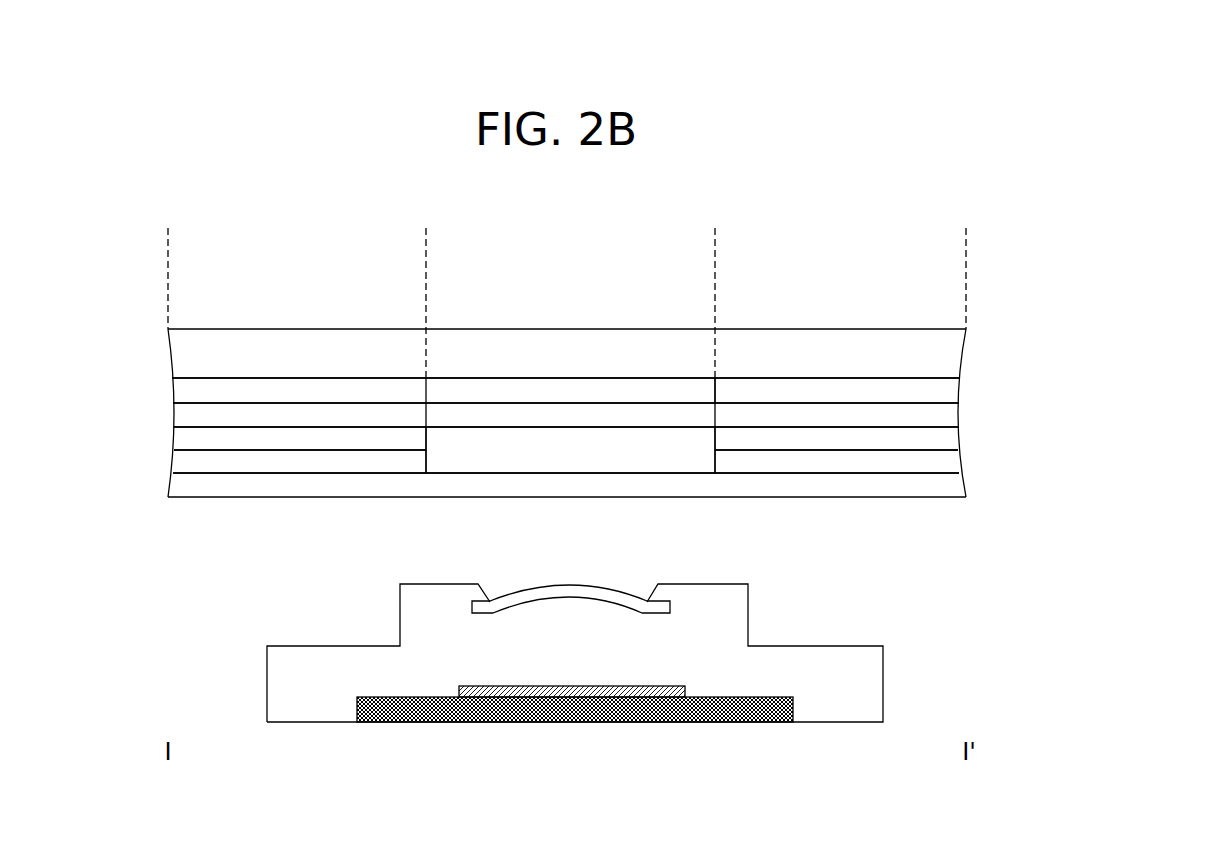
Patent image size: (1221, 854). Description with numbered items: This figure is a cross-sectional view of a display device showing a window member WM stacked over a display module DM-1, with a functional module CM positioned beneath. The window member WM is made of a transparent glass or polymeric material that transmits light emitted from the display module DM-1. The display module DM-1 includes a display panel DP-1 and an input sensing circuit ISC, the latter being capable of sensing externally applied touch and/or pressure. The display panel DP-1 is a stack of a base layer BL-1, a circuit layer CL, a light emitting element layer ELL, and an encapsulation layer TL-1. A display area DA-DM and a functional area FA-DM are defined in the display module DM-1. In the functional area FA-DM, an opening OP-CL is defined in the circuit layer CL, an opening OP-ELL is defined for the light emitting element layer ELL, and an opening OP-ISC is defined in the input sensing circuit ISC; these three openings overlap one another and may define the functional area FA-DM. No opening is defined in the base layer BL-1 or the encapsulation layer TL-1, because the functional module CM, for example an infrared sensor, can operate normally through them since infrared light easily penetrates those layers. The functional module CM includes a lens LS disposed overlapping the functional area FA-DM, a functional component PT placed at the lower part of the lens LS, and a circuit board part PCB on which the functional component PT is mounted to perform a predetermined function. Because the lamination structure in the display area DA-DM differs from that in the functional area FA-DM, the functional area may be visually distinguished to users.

The display area DA-DM is at (966, 236).
The functional area FA-DM is at (426, 236).
The window member WM is at (958, 353).
The input sensing circuit ISC is at (953, 392).
The encapsulation layer TL-1 is at (955, 413).
The light emitting element layer ELL is at (955, 438).
The circuit layer CL is at (955, 462).
The base layer BL-1 is at (955, 487).
The display panel DP-1 is at (1067, 407).
The display module DM-1 is at (1137, 382).
The opening of input sensing circuit OP-ISC is at (715, 390).
The opening of light emitting element layer OP-ELL is at (714, 438).
The opening of circuit layer OP-CL is at (714, 462).
The functional module CM is at (955, 595).
The lens LS is at (662, 608).
The functional component PT is at (677, 693).
The circuit board part PCB is at (787, 708).